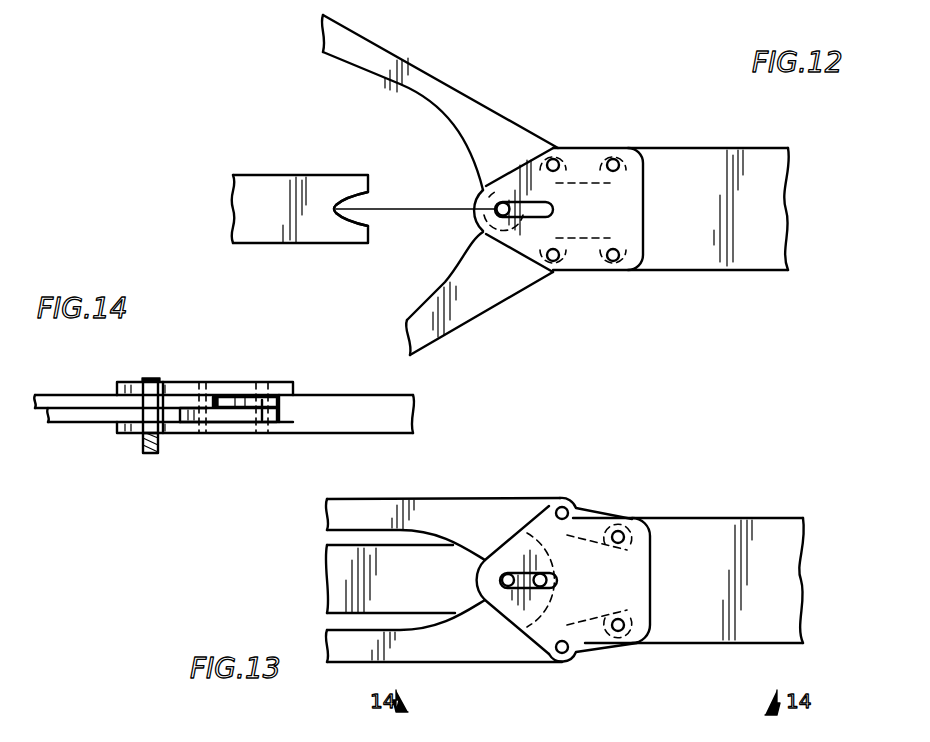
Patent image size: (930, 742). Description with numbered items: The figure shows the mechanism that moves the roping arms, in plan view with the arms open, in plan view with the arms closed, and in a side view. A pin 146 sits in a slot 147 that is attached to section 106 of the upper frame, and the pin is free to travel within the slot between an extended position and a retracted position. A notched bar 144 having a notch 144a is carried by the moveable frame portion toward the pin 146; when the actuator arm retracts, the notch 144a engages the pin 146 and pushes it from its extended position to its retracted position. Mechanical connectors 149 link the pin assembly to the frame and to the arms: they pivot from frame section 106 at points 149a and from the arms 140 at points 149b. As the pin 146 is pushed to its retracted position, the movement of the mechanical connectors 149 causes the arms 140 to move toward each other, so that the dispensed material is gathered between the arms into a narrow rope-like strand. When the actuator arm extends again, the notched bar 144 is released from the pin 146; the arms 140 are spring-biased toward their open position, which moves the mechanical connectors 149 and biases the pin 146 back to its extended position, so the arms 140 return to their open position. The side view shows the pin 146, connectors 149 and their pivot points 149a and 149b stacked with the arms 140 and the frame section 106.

In FIG. 12, the upper frame extension 106 is at (742, 260).
In FIG. 13, the upper frame extension 106 is at (753, 519).
In FIG. 14, the upper frame extension 106 is at (330, 395).
In FIG. 12, the roping arms 140 is at (419, 72).
In FIG. 13, the roping arms 140 is at (463, 500).
In FIG. 14, the roping arms 140 is at (58, 395).
In FIG. 12, the notched bar 144 is at (313, 177).
In FIG. 13, the notched bar 144 is at (328, 595).
In FIG. 12, the notch 144a is at (340, 244).
In FIG. 12, the pin 146 is at (501, 203).
In FIG. 13, the pin 146 is at (540, 574).
In FIG. 14, the pin 146 is at (149, 378).
In FIG. 12, the slot 147 is at (556, 209).
In FIG. 13, the slot 147 is at (558, 582).
In FIG. 12, the mechanical connectors 149 is at (590, 163).
In FIG. 13, the mechanical connectors 149 is at (590, 507).
In FIG. 14, the mechanical connectors 149 is at (237, 397).
In FIG. 12, the pivot points on frame section 149a is at (617, 165).
In FIG. 13, the pivot points on frame section 149a is at (620, 535).
In FIG. 14, the pivot points on frame section 149a is at (266, 433).
In FIG. 12, the pivot points on arms 149b is at (553, 160).
In FIG. 13, the pivot points on arms 149b is at (560, 507).
In FIG. 14, the pivot points on arms 149b is at (200, 420).